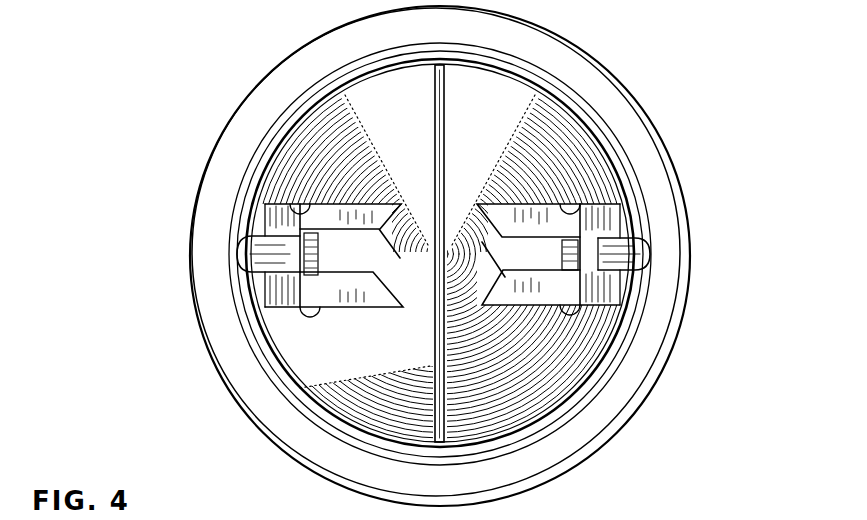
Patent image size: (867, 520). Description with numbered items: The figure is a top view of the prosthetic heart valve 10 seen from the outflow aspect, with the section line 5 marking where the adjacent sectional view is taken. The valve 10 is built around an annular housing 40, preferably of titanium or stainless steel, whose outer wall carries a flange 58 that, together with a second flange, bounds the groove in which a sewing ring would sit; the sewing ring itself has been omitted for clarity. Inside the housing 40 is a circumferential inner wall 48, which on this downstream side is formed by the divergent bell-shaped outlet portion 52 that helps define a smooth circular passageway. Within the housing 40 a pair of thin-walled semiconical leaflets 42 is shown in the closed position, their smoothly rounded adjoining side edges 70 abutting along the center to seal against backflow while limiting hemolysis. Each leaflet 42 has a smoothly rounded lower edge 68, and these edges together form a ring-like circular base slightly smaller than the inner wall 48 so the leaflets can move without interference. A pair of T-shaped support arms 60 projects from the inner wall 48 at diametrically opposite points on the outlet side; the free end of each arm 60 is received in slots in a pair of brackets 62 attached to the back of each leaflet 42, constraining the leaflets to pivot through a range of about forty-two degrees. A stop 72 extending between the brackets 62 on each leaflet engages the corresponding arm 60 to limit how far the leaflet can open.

The prosthetic heart valve 10 is at (647, 92).
The annular housing 40 is at (642, 163).
The semiconical leaflets 42 is at (364, 100).
The circumferential inner wall 48 is at (356, 422).
The outlet portion 52 is at (373, 445).
The flange 58 is at (656, 380).
The T-shaped support arms 60 is at (246, 256).
The brackets 62 is at (370, 282).
The lower edge 68 is at (553, 408).
The side edges 70 is at (441, 140).
The stop 72 is at (318, 262).
The section line 5- 5 is at (778, 255).